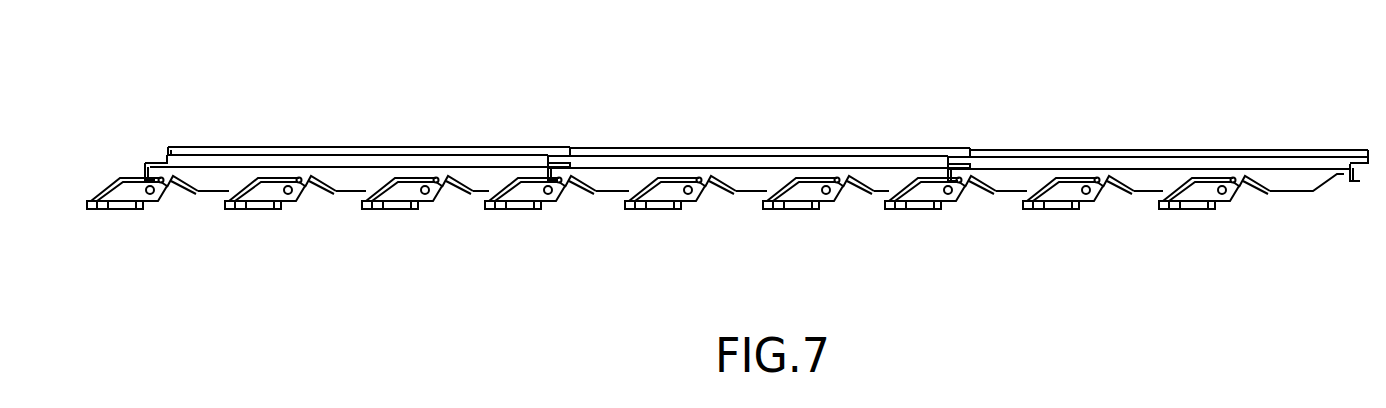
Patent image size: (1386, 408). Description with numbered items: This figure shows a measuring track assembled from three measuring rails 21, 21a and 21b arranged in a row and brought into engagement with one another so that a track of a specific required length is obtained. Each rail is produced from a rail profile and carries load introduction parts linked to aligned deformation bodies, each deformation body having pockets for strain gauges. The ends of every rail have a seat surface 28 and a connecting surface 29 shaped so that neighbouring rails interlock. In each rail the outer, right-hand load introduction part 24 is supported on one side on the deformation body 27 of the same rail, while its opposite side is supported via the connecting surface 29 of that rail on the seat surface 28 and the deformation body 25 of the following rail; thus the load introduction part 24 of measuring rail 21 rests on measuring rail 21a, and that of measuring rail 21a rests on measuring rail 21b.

The measuring rail 21 is at (403, 122).
The measuring rail 21a is at (716, 122).
The measuring rail 21b is at (1110, 122).
The connecting surface 29 is at (571, 148).
The seat surface 28 is at (153, 122).
The deformation body 27 is at (398, 211).
The deformation body 25 is at (529, 193).
The load introduction part 24 is at (494, 183).